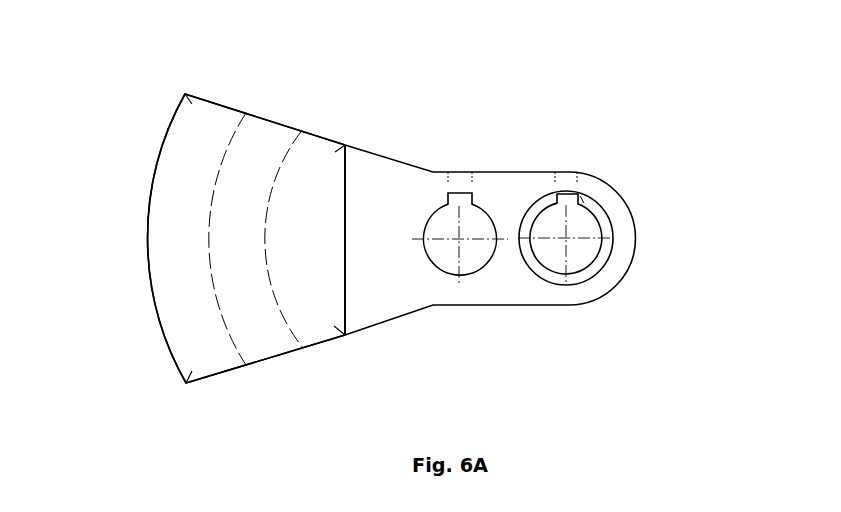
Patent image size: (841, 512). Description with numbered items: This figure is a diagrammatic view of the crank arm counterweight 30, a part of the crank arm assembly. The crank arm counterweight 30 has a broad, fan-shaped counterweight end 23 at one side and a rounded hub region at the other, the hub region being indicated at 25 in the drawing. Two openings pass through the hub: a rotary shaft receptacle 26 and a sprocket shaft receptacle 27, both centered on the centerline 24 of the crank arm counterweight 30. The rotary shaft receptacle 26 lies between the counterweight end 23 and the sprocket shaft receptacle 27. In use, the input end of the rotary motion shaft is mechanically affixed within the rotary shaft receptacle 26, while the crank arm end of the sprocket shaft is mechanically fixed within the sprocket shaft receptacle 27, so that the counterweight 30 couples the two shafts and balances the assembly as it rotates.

The counterweight end 23 is at (335, 212).
The centerline 24 is at (537, 202).
The arm body / hub 25 is at (628, 160).
The rotary shaft receptacle 26 is at (510, 265).
The sprocket shaft receptacle 27 is at (592, 235).
The crank arm counterweight 30 is at (177, 344).